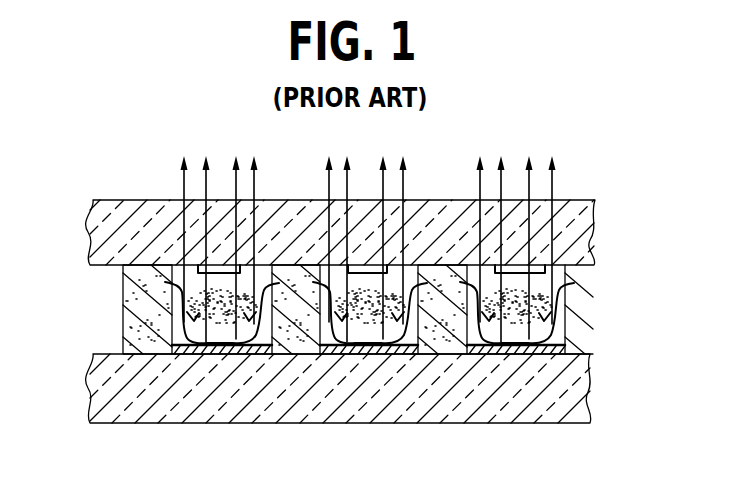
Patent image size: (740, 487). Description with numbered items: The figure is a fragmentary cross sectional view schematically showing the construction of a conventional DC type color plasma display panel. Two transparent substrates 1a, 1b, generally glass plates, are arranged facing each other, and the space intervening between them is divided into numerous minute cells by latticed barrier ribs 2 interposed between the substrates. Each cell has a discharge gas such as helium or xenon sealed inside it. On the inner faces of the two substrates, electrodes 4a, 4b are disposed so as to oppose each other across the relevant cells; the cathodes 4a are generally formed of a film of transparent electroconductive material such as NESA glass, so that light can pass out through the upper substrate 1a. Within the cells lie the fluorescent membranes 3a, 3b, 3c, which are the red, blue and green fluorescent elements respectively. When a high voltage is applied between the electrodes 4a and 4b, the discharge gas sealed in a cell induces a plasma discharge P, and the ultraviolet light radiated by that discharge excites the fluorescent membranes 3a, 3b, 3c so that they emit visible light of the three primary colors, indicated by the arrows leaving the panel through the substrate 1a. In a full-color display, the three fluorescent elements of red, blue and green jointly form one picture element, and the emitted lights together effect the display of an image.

The transparent substrate 1a is at (585, 229).
The transparent substrate 1b is at (577, 402).
The barrier ribs 2 is at (123, 322).
The fluorescent membrane 3a is at (253, 345).
The fluorescent membrane 3b is at (403, 345).
The fluorescent membrane 3c is at (545, 345).
The cathode 4a is at (545, 271).
The electrode 4b is at (560, 336).
The plasma discharge P is at (165, 282).